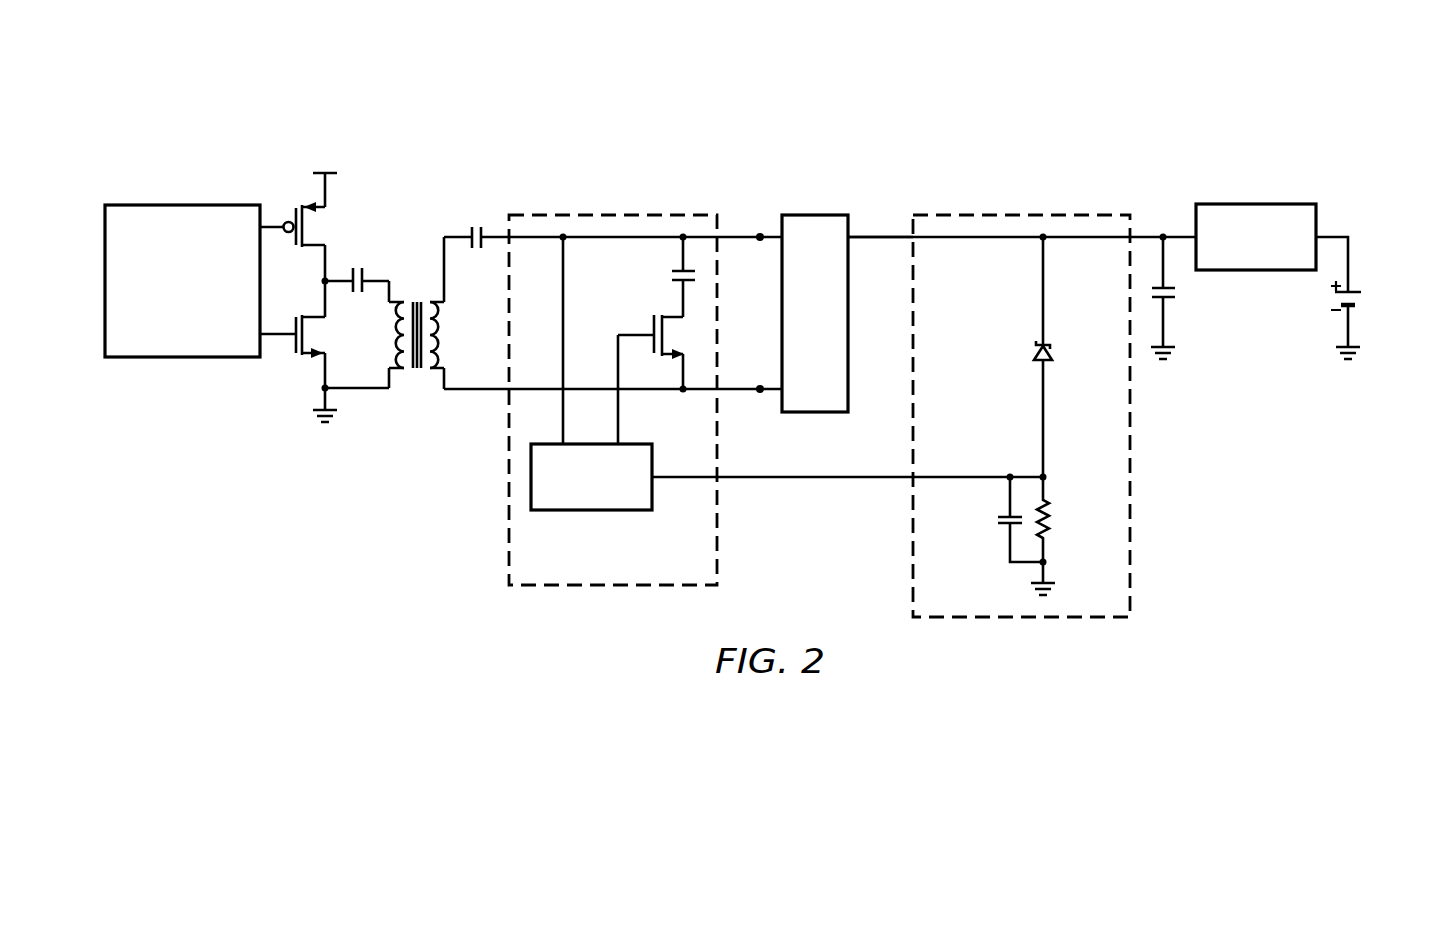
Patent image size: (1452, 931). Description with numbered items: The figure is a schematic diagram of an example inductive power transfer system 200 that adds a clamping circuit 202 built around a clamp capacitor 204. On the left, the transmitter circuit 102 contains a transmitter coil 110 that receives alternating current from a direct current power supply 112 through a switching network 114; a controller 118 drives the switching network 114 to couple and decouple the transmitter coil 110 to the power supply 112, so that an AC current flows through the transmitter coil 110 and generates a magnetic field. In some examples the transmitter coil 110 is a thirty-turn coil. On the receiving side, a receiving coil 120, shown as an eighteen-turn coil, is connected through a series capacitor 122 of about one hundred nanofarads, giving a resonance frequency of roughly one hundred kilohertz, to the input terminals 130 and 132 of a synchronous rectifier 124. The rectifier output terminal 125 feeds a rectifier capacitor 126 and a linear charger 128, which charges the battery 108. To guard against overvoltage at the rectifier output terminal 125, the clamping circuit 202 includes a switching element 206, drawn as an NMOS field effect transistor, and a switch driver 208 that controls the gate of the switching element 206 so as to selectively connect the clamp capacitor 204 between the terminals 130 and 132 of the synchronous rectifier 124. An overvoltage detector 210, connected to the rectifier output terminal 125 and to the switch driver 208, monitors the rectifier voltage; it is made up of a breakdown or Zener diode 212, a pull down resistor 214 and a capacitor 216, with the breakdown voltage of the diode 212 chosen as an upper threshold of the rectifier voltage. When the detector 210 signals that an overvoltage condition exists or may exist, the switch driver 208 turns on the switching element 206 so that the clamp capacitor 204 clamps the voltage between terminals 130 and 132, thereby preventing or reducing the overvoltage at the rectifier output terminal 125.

The inductive power transfer system 200 is at (226, 75).
The transmitter circuit 102 is at (416, 138).
The direct current (DC) power supply 112 is at (318, 172).
The switching network 114 is at (367, 229).
The controller 118 is at (182, 205).
The transmitter coil 110 is at (398, 301).
The receiving coil 120 is at (437, 371).
The series capacitor 122 is at (475, 226).
The clamping circuit 202 is at (611, 210).
The clamp capacitor 204 is at (671, 275).
The switching element 206 is at (653, 322).
The switch driver 208 is at (590, 511).
The terminal 130 is at (760, 230).
The terminal 132 is at (760, 398).
The synchronous rectifier 124 is at (814, 214).
The rectifier output terminal 125 is at (868, 236).
The overvoltage detector 210 is at (1025, 211).
The breakdown diode 212 is at (1036, 345).
The pull down resistor 214 is at (1052, 520).
The capacitor 216 is at (998, 520).
The linear charger 128 is at (1255, 203).
The rectifier capacitor 126 is at (1178, 293).
The battery 108 is at (1367, 296).